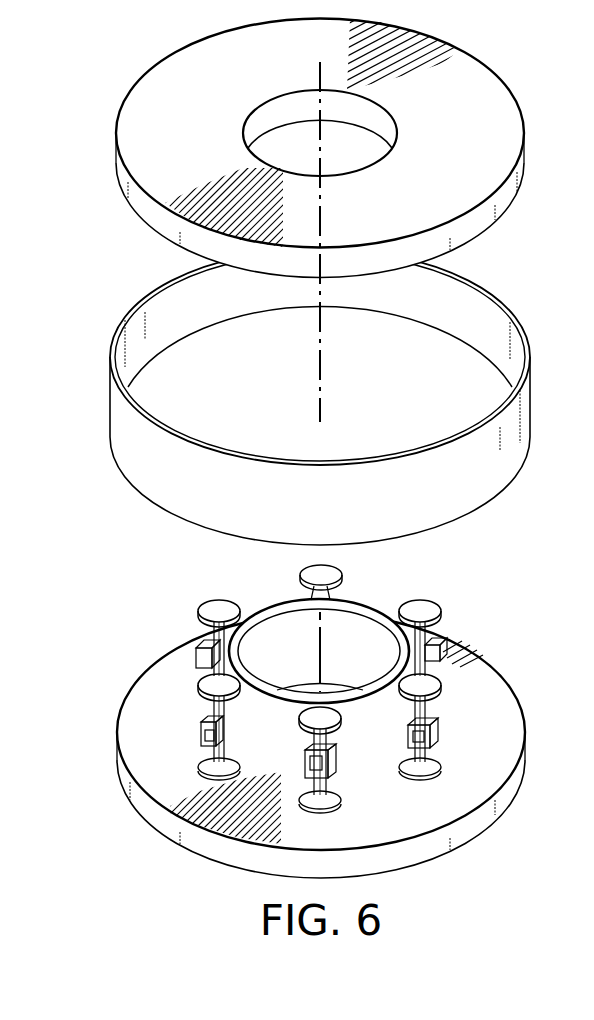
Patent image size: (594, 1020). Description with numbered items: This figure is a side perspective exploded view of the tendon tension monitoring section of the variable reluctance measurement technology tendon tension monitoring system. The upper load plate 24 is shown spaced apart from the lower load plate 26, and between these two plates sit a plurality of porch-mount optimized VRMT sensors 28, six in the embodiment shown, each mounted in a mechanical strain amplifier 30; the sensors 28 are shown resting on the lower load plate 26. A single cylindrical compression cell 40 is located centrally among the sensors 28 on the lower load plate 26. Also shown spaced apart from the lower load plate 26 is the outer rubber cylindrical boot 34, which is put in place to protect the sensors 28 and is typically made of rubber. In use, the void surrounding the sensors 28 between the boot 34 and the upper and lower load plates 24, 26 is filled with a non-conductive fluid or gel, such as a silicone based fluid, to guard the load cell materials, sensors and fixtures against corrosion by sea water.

The upper load plate 24 is at (524, 150).
The outer rubber cylindrical boot 34 is at (530, 386).
The lower load plate 26 is at (525, 742).
The cylindrical compression cell 40 is at (380, 610).
The mechanical strain amplifier 30 is at (211, 606).
The porch-mount optimized VRMT sensor 28 is at (444, 728).